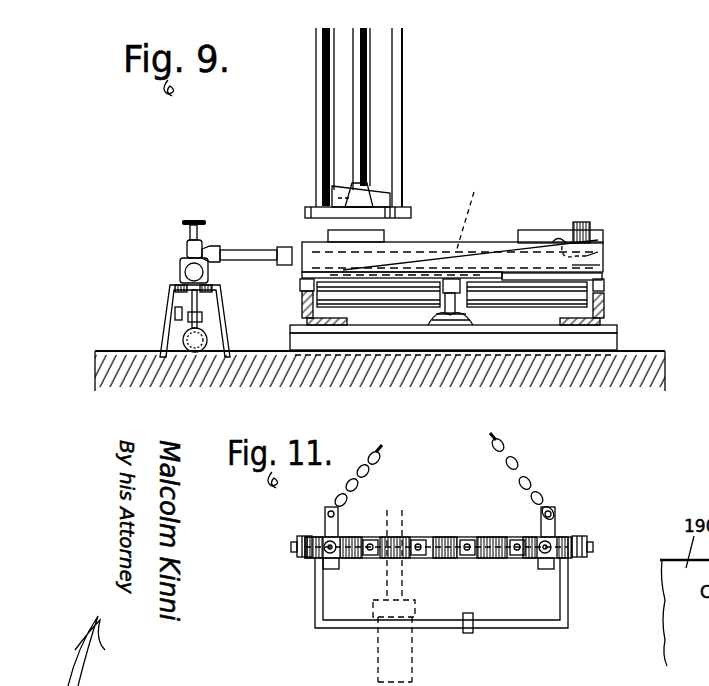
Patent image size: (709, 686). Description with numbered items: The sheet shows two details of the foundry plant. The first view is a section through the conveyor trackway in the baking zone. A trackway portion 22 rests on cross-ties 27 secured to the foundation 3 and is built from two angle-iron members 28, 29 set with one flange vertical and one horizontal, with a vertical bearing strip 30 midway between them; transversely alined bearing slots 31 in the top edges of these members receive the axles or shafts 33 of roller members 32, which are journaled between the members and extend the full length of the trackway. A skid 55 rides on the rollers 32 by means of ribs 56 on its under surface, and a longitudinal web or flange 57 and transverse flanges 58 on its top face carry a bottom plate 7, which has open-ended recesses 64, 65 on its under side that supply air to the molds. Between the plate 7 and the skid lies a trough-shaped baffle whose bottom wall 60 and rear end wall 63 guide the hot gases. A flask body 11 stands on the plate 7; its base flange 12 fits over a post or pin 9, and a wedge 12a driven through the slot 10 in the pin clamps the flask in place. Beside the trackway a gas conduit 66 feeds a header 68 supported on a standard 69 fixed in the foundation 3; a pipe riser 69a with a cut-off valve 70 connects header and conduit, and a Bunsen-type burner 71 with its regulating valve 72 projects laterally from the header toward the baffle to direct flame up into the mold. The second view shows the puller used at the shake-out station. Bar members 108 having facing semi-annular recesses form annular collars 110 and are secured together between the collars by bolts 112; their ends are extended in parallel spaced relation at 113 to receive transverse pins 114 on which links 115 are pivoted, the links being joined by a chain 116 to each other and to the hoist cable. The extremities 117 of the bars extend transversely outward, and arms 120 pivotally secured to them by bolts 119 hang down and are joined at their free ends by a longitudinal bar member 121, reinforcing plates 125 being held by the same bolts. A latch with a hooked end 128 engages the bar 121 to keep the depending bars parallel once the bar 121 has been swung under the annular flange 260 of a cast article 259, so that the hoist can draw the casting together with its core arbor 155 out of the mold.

In FIG. 9, the foundation 3 is at (626, 365).
In FIG. 9, the bottom plate 7 is at (482, 232).
In FIG. 9, the post or pin 9 is at (366, 186).
In FIG. 9, the wedge receiving slot 10 is at (272, 118).
In FIG. 9, the flask body 11 is at (403, 96).
In FIG. 9, the base flange 12 is at (410, 212).
In FIG. 9, the wedge 12a is at (390, 199).
In FIG. 9, the trackway portion 22 is at (608, 308).
In FIG. 9, the cross-tie 27 is at (614, 338).
In FIG. 9, the angle-iron member 28 is at (312, 311).
In FIG. 9, the angle-iron member 29 is at (610, 323).
In FIG. 9, the bearing strip 30 is at (457, 325).
In FIG. 9, the bearing slot 31 is at (436, 297).
In FIG. 9, the roller member 32 is at (388, 300).
In FIG. 9, the axle or shaft 33 is at (604, 296).
In FIG. 9, the skid 55 is at (606, 247).
In FIG. 9, the rib 56 is at (604, 268).
In FIG. 9, the longitudinal web or flange 57 is at (470, 212).
In FIG. 9, the transverse flange 58 is at (594, 243).
In FIG. 9, the base or bottom wall 60 is at (601, 241).
In FIG. 9, the rear end wall 63 is at (541, 230).
In FIG. 9, the recess 64 is at (355, 237).
In FIG. 9, the recess 65 is at (561, 242).
In FIG. 9, the conduit 66 is at (194, 352).
In FIG. 9, the header 68 is at (181, 269).
In FIG. 9, the standard 69 is at (169, 338).
In FIG. 9, the pipe riser 69a is at (191, 299).
In FIG. 9, the control or cut-off valve 70 is at (175, 314).
In FIG. 9, the burner 71 is at (258, 250).
In FIG. 9, the regulating or control valve 72 is at (190, 242).
In FIG. 11, the bar member 108 is at (441, 535).
In FIG. 11, the annular collar 110 is at (484, 535).
In FIG. 11, the bolt 112 is at (516, 556).
In FIG. 11, the extended end portion 113 is at (340, 540).
In FIG. 11, the transverse pin 114 is at (336, 562).
In FIG. 11, the link 115 is at (328, 522).
In FIG. 11, the chain 116 is at (498, 454).
In FIG. 11, the extremity 117 is at (312, 562).
In FIG. 11, the bolt 119 is at (297, 549).
In FIG. 11, the arm 120 is at (315, 602).
In FIG. 11, the bar member 121 is at (527, 622).
In FIG. 11, the reinforcing bar or plate 125 is at (300, 538).
In FIG. 11, the hooked end 128 is at (469, 613).
In FIG. 11, the core arbor 155 is at (402, 510).
In FIG. 11, the cast article 259 is at (410, 660).
In FIG. 11, the annular flange 260 is at (368, 608).